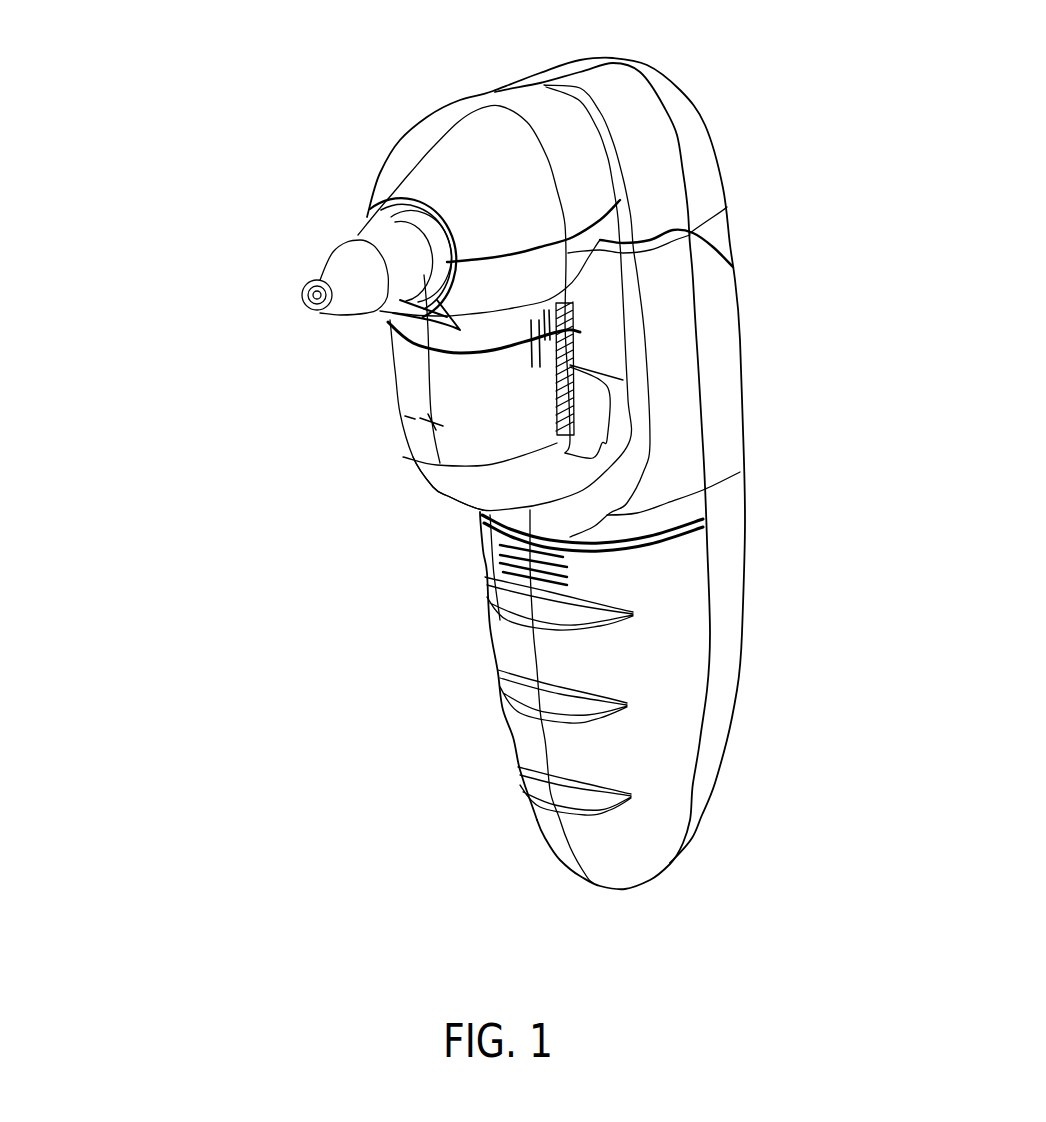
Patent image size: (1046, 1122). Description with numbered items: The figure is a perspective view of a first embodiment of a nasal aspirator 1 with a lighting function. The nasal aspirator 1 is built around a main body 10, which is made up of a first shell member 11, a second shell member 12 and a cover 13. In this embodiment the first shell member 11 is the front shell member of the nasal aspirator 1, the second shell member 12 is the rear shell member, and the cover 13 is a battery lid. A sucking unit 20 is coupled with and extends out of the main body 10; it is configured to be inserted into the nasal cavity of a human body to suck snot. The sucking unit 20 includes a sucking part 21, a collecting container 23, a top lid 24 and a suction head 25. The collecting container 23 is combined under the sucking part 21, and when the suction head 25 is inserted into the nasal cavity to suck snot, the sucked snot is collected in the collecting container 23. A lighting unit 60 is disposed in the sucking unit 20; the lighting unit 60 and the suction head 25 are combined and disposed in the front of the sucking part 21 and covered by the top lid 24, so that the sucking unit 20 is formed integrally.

The nasal aspirator 1 is at (75, 47).
The main body 10 is at (808, 221).
The first shell member 11 is at (603, 353).
The second shell member 12 is at (723, 628).
The cover 13 is at (527, 746).
The sucking unit 20 is at (343, 100).
The sucking part 21 is at (400, 339).
The collecting container 23 is at (463, 487).
The top lid 24 is at (480, 90).
The suction head 25 is at (320, 268).
The lighting unit 60 is at (387, 197).